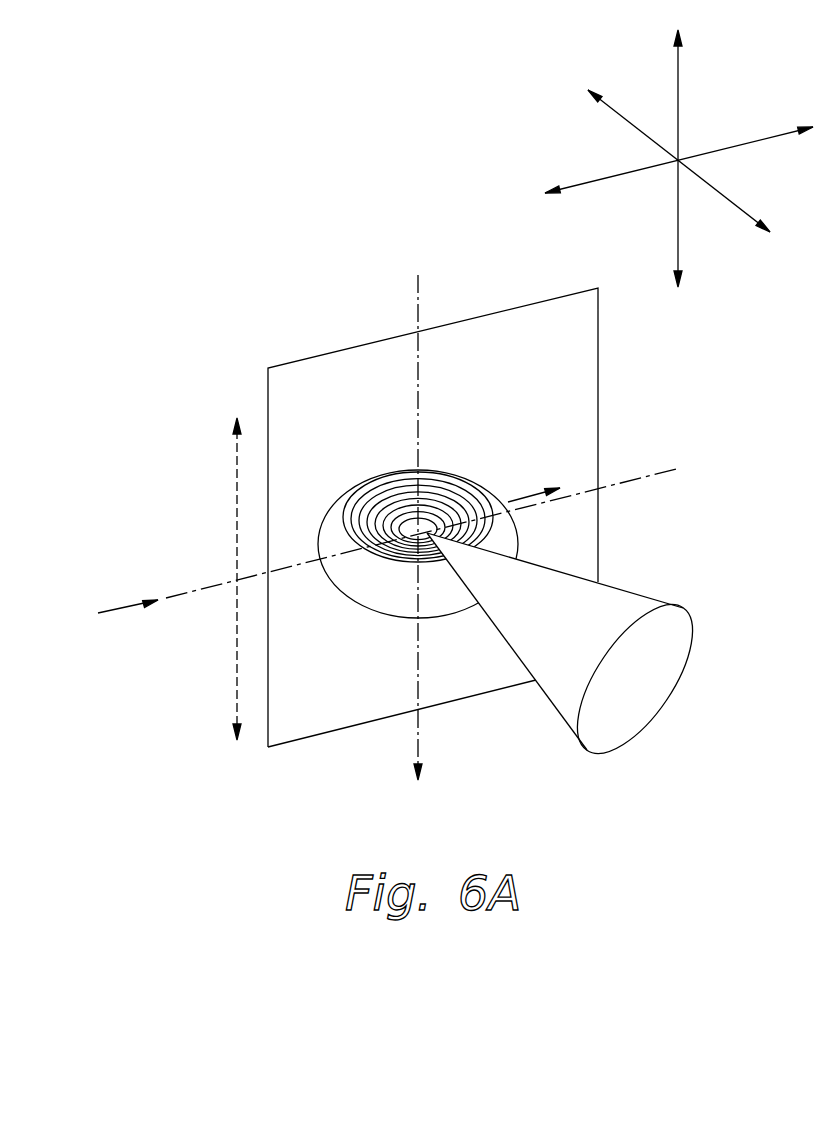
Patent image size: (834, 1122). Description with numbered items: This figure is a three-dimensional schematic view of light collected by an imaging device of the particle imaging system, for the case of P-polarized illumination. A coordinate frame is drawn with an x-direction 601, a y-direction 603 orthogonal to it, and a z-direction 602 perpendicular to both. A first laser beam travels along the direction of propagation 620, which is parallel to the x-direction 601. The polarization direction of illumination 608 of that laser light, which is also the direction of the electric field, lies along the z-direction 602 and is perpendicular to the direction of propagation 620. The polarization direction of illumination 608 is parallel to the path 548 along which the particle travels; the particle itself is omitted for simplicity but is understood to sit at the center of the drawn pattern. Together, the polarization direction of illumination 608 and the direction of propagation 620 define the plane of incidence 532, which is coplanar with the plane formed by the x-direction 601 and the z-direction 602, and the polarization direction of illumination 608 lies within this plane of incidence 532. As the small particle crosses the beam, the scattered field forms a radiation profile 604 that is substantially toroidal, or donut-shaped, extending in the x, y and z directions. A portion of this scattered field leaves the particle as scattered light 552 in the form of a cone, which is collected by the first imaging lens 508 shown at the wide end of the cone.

The x-direction 601 is at (719, 148).
The z-direction 602 is at (680, 70).
The y-direction 603 is at (727, 192).
The plane of incidence 532 is at (547, 302).
The path 548 is at (417, 298).
The radiation profile 604 is at (378, 613).
The polarization direction of illumination 608 is at (237, 470).
The direction of propagation 620 is at (120, 608).
The scattered light 552 is at (558, 713).
The first imaging lens 508 is at (617, 740).